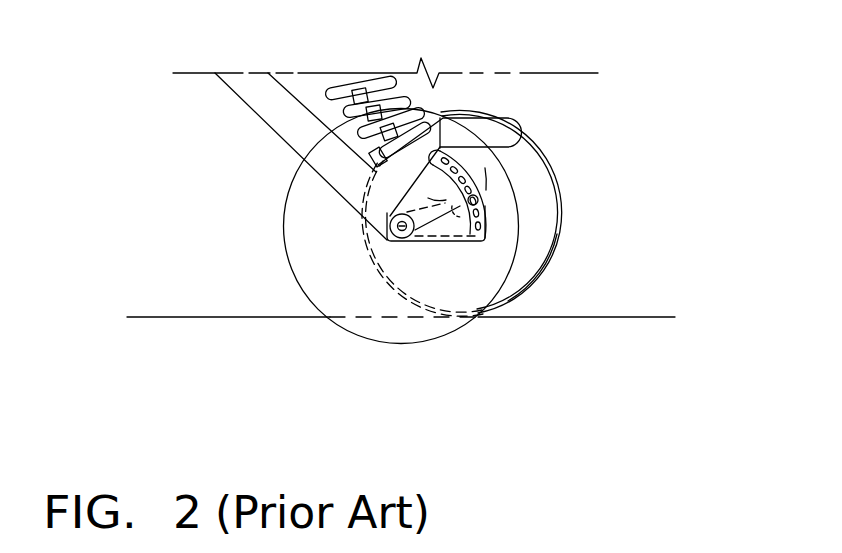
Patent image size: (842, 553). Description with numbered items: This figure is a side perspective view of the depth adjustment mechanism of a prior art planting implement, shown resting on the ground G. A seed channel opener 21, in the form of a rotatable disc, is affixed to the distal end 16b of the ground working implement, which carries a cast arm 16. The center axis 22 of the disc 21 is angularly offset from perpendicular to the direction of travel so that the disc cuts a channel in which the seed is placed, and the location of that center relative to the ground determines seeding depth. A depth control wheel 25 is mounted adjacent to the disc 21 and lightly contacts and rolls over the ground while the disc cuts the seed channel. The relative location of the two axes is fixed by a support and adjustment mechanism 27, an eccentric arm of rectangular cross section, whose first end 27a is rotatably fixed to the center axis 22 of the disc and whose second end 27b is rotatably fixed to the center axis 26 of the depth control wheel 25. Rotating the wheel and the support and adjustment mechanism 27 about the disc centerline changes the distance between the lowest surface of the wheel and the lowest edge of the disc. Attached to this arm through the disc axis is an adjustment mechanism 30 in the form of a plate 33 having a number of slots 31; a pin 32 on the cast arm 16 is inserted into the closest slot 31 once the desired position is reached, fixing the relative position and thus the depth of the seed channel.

The cast arm 16 is at (267, 122).
The distal end of the ground working implement 16b is at (387, 238).
The seed channel opener 21 is at (424, 343).
The center axis of the disc 22 is at (385, 238).
The depth control wheel 25 is at (505, 147).
The center axis of the depth control wheel 26 is at (455, 212).
The support and adjustment mechanism 27 is at (470, 243).
The first end 27a is at (387, 242).
The second end 27b is at (486, 208).
The adjustment mechanism 30 is at (499, 171).
The slots 31 is at (483, 200).
The pin 32 is at (480, 190).
The plate 33 is at (480, 196).
The ground G is at (170, 317).